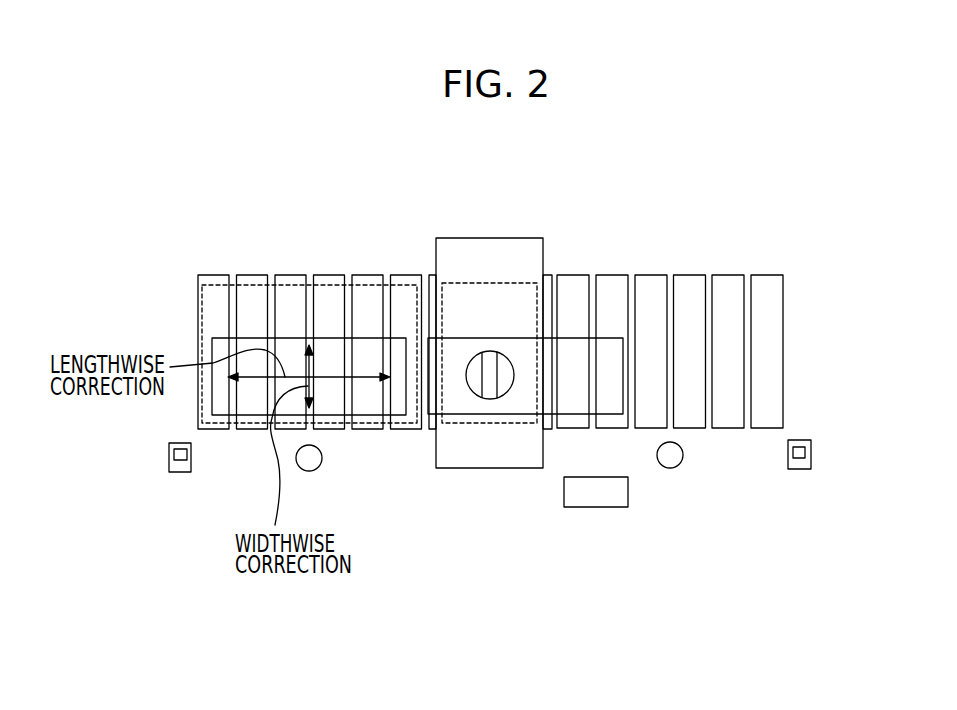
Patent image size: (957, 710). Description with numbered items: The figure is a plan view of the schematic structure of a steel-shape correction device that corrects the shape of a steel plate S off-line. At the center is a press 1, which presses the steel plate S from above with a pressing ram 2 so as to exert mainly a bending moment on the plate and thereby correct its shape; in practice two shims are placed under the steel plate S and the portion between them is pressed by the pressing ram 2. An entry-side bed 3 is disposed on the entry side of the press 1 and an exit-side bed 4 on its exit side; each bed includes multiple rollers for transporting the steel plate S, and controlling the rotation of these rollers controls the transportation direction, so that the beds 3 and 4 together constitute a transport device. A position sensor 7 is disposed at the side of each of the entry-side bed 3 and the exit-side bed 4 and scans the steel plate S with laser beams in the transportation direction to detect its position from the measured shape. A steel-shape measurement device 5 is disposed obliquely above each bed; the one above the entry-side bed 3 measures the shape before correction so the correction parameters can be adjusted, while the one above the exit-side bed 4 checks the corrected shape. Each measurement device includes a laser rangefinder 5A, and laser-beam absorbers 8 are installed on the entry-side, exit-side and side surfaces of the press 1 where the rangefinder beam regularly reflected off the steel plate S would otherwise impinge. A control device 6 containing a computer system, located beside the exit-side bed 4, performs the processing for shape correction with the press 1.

The press 1 is at (500, 240).
The pressing ram 2 is at (502, 390).
The entry-side bed 3 is at (420, 215).
The exit-side bed 4 is at (782, 215).
The steel-shape measurement device 5 is at (187, 465).
The laser rangefinder 5A is at (173, 453).
The control device 6 is at (622, 500).
The position sensor 7 is at (313, 465).
The laser-beam absorber 8 is at (547, 282).
The steel plate S is at (253, 340).